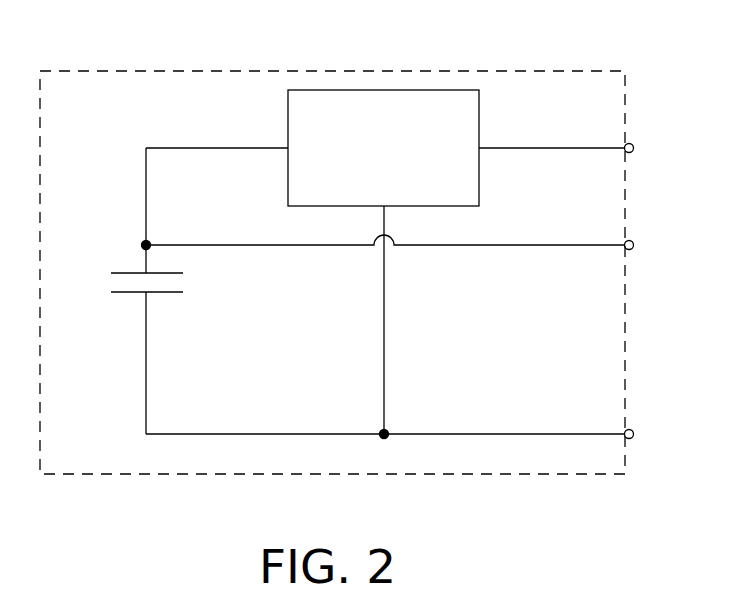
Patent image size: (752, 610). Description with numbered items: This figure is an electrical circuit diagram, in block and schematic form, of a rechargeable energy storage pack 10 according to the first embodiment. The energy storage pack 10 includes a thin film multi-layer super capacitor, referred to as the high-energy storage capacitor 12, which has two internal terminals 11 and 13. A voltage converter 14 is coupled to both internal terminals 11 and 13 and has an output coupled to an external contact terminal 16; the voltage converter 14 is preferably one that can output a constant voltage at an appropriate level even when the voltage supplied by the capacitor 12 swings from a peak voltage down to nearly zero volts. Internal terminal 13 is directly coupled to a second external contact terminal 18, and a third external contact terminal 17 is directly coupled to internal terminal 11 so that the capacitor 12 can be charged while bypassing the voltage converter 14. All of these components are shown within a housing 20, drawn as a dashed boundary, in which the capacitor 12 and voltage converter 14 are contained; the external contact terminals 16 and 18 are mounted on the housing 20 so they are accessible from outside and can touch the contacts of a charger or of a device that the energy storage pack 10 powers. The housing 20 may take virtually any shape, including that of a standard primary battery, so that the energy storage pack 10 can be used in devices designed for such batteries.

The energy storage pack 10 is at (399, 28).
The housing 20 is at (133, 71).
The internal terminal 11 is at (163, 148).
The high-energy storage capacitor 12 is at (137, 272).
The internal terminal 13 is at (146, 398).
The voltage converter 14 is at (288, 124).
The external contact terminal 16 is at (632, 144).
The third external contact terminal 17 is at (632, 241).
The second external contact terminal 18 is at (632, 430).